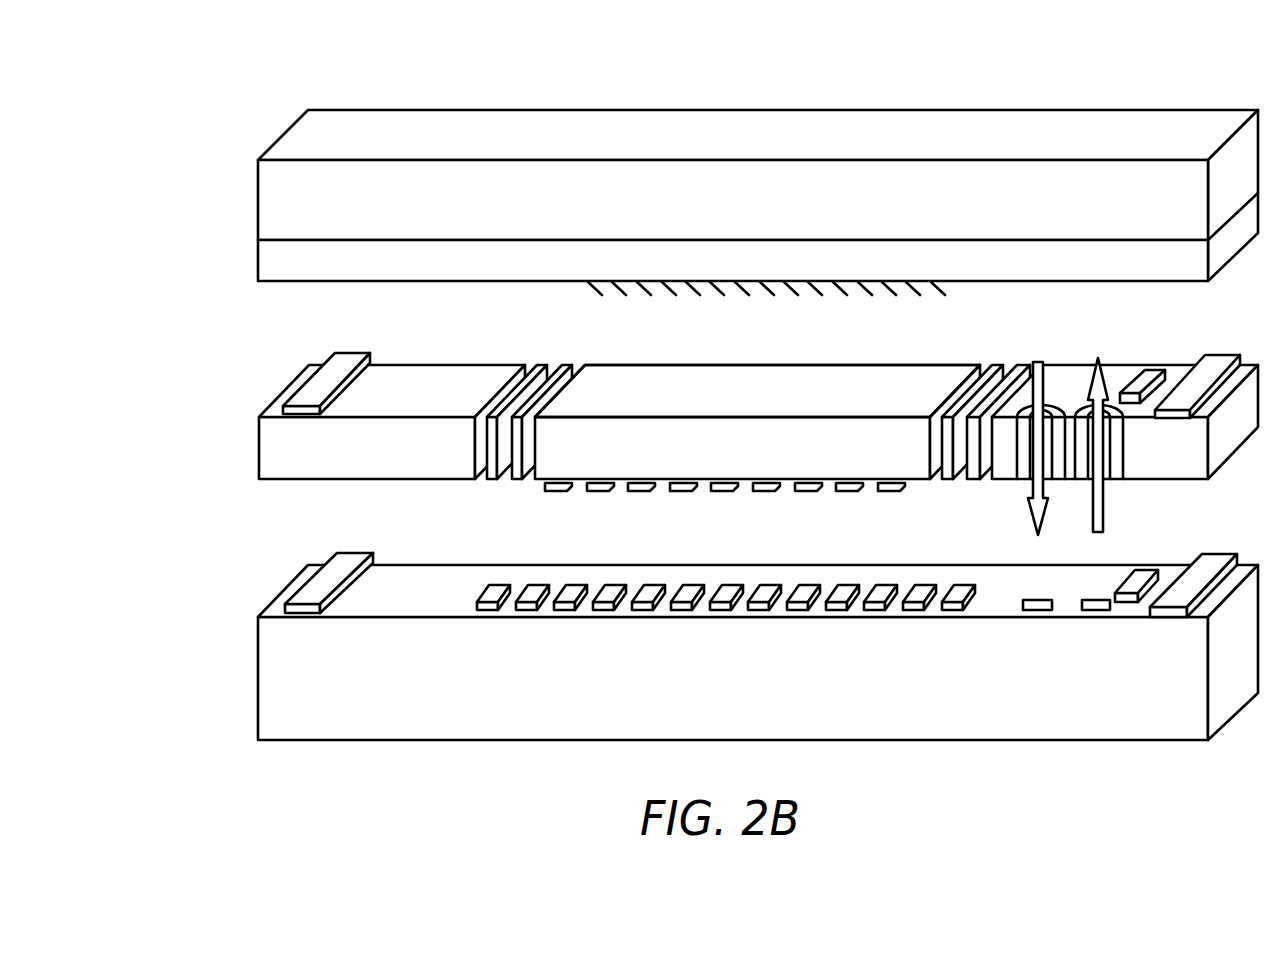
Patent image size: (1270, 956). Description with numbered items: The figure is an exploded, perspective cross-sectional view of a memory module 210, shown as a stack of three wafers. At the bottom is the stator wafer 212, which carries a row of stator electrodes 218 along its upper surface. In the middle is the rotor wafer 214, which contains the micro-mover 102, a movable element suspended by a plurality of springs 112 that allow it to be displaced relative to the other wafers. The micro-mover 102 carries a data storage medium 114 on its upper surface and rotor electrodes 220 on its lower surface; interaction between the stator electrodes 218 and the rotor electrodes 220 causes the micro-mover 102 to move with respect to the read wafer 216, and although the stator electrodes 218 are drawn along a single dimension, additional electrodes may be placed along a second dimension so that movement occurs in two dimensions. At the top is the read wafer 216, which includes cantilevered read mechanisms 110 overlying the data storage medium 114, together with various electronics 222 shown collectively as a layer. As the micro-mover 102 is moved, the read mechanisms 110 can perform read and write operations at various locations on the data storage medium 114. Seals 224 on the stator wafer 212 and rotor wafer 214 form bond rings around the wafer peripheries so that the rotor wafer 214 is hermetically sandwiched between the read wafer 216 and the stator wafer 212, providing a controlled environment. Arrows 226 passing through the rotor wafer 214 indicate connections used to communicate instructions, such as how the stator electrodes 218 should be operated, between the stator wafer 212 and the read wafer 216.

The micro-mover 102 is at (884, 365).
The read mechanism 110 is at (688, 304).
The spring 112 is at (540, 349).
The data storage medium 114 is at (751, 389).
The memory module 210 is at (249, 113).
The stator wafer 212 is at (258, 673).
The rotor wafer 214 is at (258, 452).
The read wafer 216 is at (258, 209).
The stator electrode 218 is at (478, 597).
The rotor electrode 220 is at (545, 488).
The electronics 222 is at (258, 265).
The seal 224 is at (312, 363).
The arrows 226 is at (1108, 499).